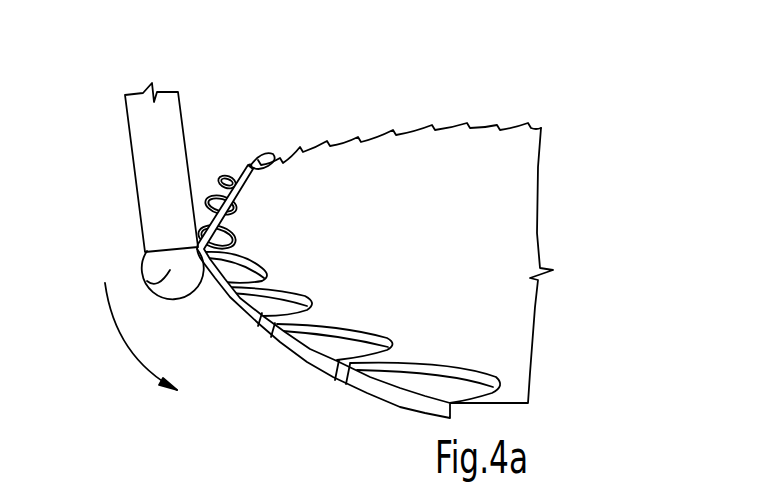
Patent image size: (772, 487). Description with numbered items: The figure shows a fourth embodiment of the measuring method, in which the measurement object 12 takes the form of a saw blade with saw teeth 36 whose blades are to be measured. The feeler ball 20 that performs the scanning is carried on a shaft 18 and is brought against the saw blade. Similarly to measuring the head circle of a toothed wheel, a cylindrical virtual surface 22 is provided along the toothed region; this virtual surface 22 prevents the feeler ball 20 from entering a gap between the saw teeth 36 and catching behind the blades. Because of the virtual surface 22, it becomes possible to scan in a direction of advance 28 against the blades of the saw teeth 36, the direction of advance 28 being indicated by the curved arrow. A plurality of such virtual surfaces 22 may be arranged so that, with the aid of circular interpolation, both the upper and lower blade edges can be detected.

The measurement object 12 is at (513, 302).
The tool shaft 18 is at (157, 138).
The feeler ball 20 is at (143, 281).
The cylindrical virtual surface 22 is at (307, 348).
The direction of advance 28 is at (128, 347).
The saw teeth 36 is at (258, 157).